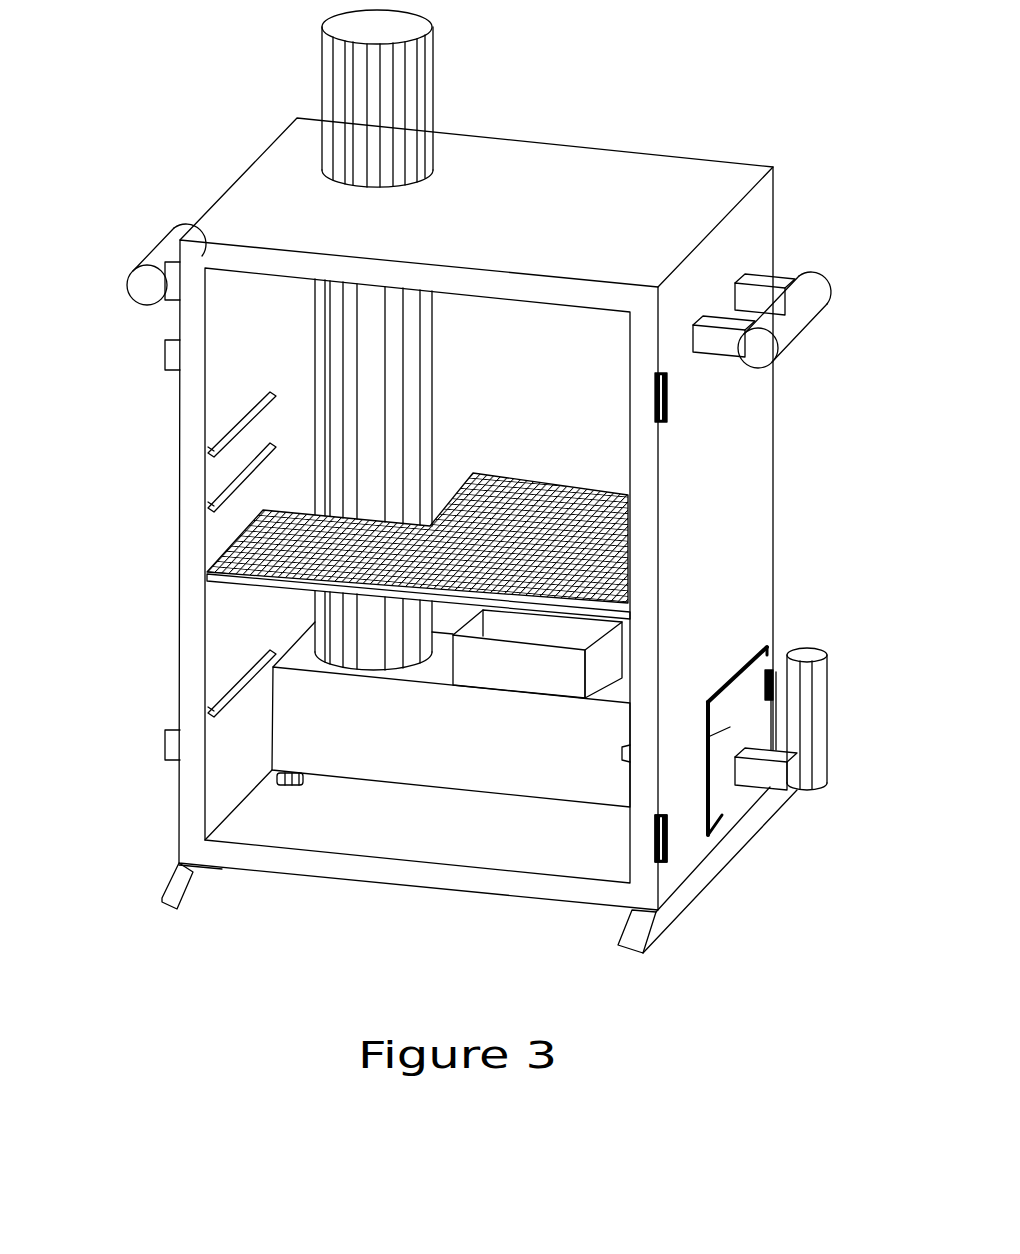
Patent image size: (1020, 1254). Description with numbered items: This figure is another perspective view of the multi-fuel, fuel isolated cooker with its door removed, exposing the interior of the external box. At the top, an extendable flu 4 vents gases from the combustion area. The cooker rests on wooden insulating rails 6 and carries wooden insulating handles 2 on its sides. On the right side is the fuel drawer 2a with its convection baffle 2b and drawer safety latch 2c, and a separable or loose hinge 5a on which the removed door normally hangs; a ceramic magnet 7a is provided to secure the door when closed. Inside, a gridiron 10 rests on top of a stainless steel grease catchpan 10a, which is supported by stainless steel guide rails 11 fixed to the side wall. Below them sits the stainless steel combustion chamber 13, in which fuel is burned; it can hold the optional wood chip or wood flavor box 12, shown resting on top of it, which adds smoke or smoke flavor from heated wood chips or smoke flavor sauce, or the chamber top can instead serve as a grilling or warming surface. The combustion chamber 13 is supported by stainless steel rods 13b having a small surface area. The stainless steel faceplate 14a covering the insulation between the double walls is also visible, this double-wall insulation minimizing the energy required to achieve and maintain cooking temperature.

The extendable flu 4 is at (325, 57).
The stainless steel faceplate 14a is at (438, 277).
The wooden insulating handles 2 is at (815, 295).
The fuel drawer 2a is at (720, 805).
The convection baffle 2b is at (763, 658).
The drawer safety latch 2c is at (775, 687).
The separable or loose hinge 5a is at (670, 842).
The stainless steel guide rails 11 is at (226, 430).
The gridiron 10 is at (230, 538).
The stainless steel grease catchpan 10a is at (278, 583).
The wood chip or wood flavor box 12 is at (605, 663).
The combustion chamber 13 is at (507, 760).
The stainless steel rods 13b is at (277, 782).
The ceramic magnet 7a is at (172, 745).
The wooden insulating rails 6 is at (178, 880).